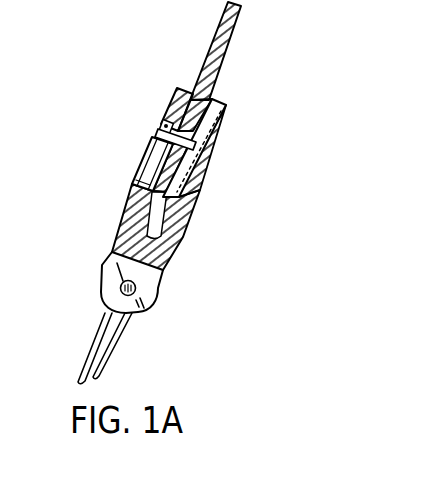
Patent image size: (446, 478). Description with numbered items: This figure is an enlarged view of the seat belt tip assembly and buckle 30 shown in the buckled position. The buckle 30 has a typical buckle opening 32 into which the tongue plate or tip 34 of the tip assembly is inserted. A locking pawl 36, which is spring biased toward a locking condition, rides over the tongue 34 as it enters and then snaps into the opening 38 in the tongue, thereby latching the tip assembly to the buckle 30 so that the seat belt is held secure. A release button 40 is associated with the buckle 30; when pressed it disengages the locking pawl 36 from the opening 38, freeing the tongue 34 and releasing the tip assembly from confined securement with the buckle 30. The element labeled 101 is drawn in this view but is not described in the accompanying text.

The cable 101 is at (231, 41).
The buckle opening 32 is at (222, 98).
The locking pawl 36 is at (170, 127).
The release button 40 is at (147, 153).
The opening 38 is at (181, 208).
The tongue plate 34 is at (173, 253).
The buckle 30 is at (102, 265).